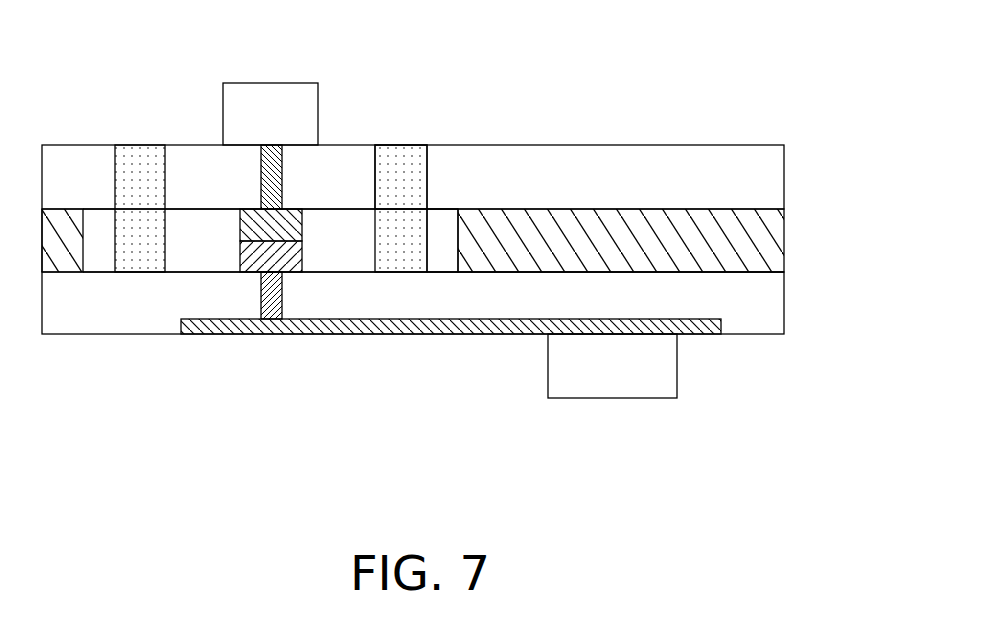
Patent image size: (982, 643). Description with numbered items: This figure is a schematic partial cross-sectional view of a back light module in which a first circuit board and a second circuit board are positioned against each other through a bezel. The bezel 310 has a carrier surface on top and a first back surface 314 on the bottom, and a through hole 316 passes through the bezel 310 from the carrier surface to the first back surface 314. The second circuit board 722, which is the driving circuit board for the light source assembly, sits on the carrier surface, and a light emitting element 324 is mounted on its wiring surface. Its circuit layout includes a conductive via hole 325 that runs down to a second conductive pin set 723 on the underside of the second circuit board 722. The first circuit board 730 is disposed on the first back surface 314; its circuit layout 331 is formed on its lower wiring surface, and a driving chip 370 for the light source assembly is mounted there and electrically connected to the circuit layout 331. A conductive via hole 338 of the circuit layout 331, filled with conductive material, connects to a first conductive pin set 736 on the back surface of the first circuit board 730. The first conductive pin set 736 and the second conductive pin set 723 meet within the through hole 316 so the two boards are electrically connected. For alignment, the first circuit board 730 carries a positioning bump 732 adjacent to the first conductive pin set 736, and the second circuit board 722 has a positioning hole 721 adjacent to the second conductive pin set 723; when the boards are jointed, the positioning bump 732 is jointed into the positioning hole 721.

The bezel 310 is at (779, 238).
The first back surface 314 is at (745, 274).
The through hole 316 is at (447, 221).
The light emitting element 324 is at (268, 95).
The conductive via hole 325 is at (260, 174).
The circuit layout 331 is at (489, 335).
The conductive via hole 338 is at (268, 327).
The driving chip 370 is at (616, 399).
The positioning hole 721 is at (388, 169).
The second circuit board 722 is at (779, 178).
The second conductive pin set 723 is at (240, 224).
The first circuit board 730 is at (779, 313).
The positioning bump 732 is at (145, 256).
The first conductive pin set 736 is at (296, 258).